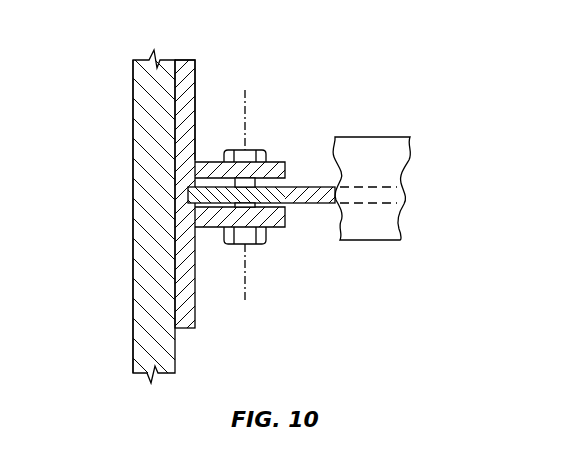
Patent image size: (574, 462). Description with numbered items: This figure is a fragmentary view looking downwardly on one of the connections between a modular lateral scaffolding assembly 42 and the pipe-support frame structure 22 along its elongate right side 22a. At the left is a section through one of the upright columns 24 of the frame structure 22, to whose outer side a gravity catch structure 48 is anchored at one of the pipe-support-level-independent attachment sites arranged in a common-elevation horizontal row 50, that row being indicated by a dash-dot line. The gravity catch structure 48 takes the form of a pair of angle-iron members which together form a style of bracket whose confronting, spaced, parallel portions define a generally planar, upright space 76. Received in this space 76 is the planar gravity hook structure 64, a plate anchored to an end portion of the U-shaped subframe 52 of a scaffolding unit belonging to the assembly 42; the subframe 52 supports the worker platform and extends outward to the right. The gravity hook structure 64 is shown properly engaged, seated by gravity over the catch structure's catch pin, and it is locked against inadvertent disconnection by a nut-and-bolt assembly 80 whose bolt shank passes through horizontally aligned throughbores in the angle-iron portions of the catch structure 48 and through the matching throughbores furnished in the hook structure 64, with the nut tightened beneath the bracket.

The frame structure 22 is at (102, 95).
The elongate right side of the frame 22a is at (203, 63).
The upright column 24 is at (133, 150).
The lateral scaffolding assembly 42 is at (417, 102).
The gravity catch structure 48 is at (197, 307).
The common-elevation horizontal row 50 is at (250, 279).
The subframe 52 is at (390, 226).
The gravity hook structure 64 is at (193, 193).
The upright space 76 is at (258, 181).
The nut-and-bolt assembly 80 is at (256, 246).